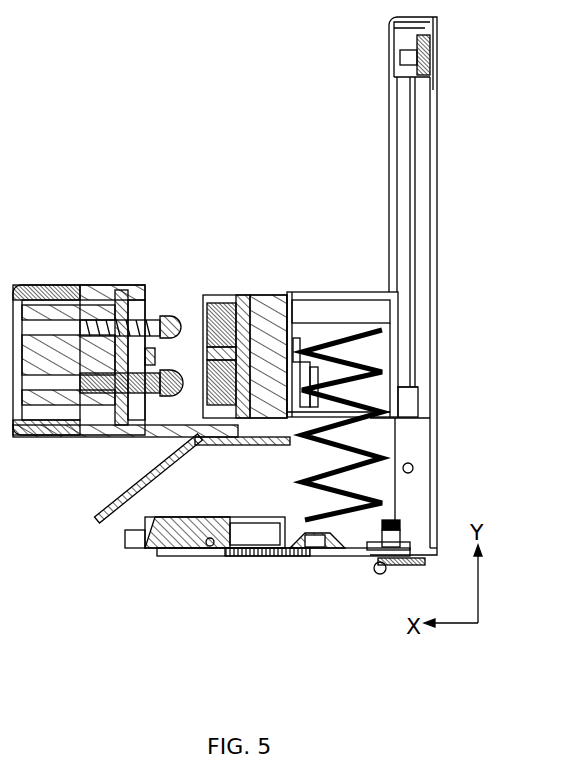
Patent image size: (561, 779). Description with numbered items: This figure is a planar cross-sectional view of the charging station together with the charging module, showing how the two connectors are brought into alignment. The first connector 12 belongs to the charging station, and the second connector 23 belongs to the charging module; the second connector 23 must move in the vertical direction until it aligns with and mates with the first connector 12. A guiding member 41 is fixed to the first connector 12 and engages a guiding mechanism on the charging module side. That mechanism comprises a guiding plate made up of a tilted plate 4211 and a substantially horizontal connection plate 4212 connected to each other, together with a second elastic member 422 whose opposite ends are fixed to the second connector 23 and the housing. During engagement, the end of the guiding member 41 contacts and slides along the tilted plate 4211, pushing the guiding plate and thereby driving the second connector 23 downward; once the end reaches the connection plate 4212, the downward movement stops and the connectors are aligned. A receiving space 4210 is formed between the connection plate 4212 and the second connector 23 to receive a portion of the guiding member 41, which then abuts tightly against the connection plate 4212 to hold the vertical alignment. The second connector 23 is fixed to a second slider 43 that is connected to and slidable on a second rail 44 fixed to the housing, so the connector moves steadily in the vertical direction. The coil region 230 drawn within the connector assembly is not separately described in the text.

The first connector 12 is at (105, 305).
The second connector 23 is at (213, 298).
The coil 230 is at (210, 308).
The receiving space 4210 is at (252, 296).
The guiding member 41 is at (133, 437).
The tilted plate 4211 is at (187, 443).
The connection plate 4212 is at (257, 430).
The second slider 43 is at (402, 398).
The second rail 44 is at (408, 279).
The second elastic member 422 is at (395, 462).